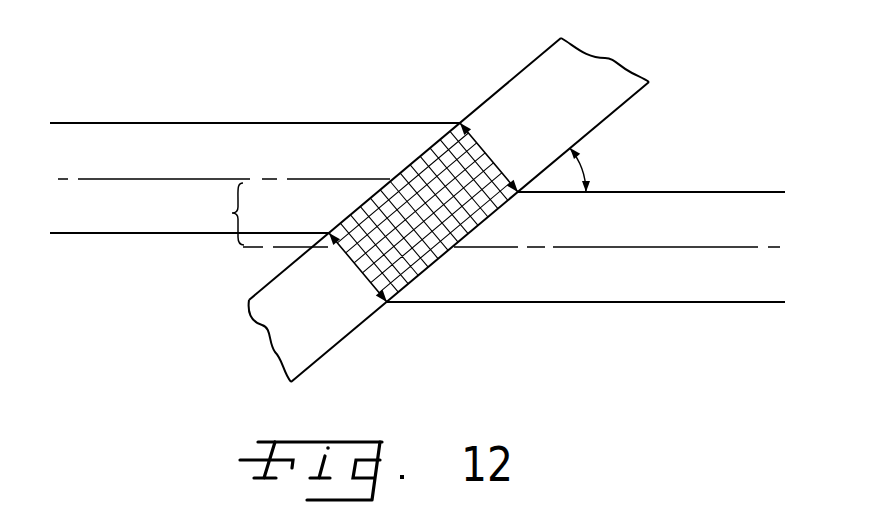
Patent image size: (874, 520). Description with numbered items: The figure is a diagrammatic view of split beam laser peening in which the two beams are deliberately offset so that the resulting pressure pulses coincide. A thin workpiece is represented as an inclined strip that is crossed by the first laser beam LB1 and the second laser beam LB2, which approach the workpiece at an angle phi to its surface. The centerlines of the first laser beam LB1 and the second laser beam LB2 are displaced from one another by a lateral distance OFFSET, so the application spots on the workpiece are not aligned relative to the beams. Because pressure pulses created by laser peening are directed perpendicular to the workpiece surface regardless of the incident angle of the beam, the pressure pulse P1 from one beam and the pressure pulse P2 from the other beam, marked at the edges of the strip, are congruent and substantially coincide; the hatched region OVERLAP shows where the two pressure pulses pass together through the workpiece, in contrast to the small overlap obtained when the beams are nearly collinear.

The pressure pulse P1 is at (442, 231).
The pressure pulse P2 is at (411, 197).
The laser beam 1 LB1 is at (238, 178).
The laser beam 2 LB2 is at (530, 247).
The overlap region (hatched) OVERLAP is at (393, 285).
The offset between centerlines OFFSET is at (232, 213).
The angle phi between strip and line bead phi is at (607, 149).
The inclined strip is at (449, 210).